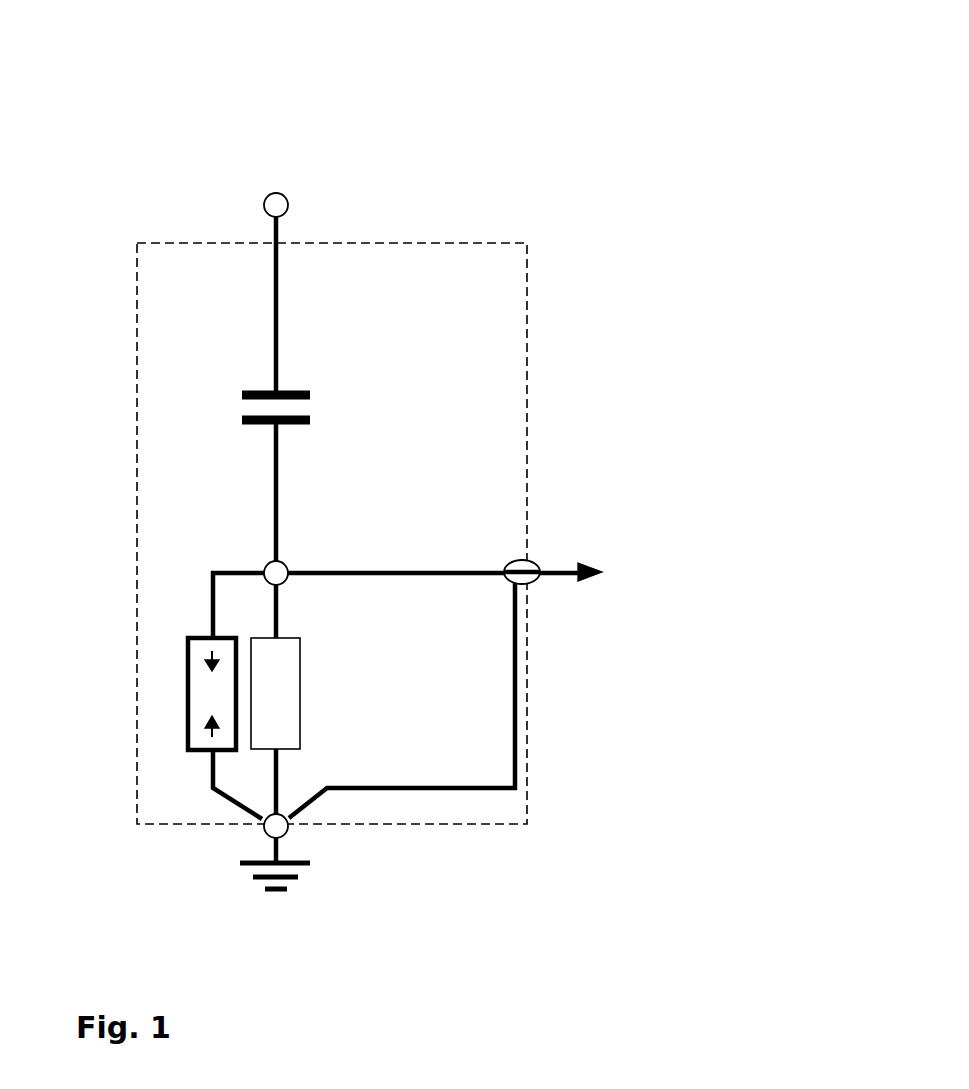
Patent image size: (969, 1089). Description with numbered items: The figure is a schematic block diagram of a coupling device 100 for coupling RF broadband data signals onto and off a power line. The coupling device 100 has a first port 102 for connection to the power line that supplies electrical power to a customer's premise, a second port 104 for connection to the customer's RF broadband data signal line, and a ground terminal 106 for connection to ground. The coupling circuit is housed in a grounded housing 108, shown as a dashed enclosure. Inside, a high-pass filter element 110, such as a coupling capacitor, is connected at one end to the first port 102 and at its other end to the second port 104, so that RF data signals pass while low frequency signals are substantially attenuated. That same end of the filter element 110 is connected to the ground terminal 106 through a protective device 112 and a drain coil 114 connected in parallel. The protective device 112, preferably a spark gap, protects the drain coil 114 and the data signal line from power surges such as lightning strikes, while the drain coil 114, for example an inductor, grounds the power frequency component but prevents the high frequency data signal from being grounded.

The coupling device 100 is at (845, 14).
The first port 102 is at (286, 196).
The second port 104 is at (528, 580).
The ground terminal 106 is at (285, 833).
The grounded housing 108 is at (483, 243).
The high-pass filter element 110 is at (315, 410).
The protective device 112 is at (192, 750).
The drain coil 114 is at (300, 713).